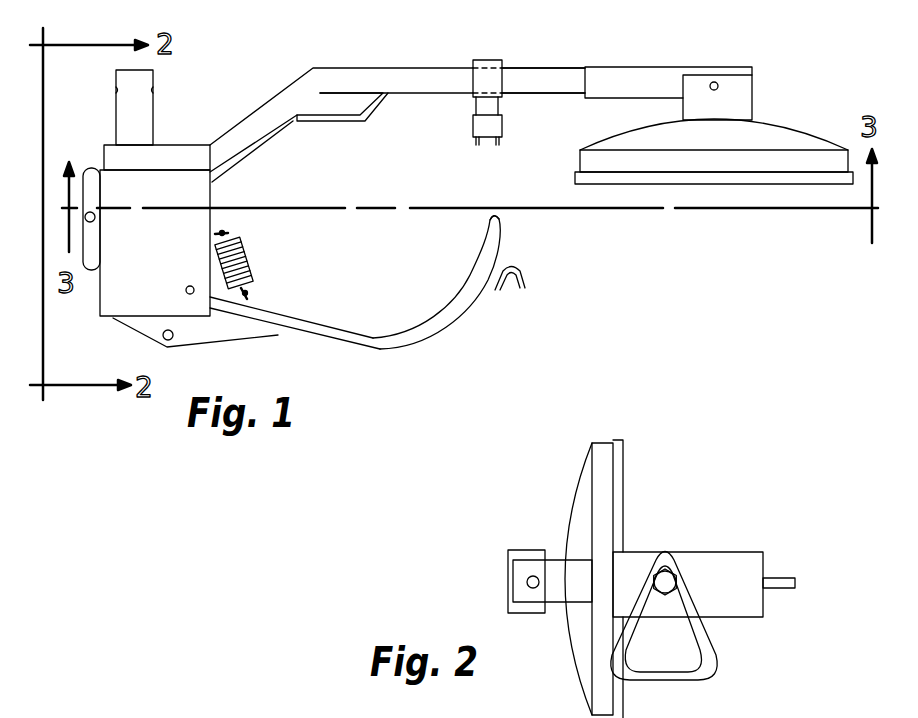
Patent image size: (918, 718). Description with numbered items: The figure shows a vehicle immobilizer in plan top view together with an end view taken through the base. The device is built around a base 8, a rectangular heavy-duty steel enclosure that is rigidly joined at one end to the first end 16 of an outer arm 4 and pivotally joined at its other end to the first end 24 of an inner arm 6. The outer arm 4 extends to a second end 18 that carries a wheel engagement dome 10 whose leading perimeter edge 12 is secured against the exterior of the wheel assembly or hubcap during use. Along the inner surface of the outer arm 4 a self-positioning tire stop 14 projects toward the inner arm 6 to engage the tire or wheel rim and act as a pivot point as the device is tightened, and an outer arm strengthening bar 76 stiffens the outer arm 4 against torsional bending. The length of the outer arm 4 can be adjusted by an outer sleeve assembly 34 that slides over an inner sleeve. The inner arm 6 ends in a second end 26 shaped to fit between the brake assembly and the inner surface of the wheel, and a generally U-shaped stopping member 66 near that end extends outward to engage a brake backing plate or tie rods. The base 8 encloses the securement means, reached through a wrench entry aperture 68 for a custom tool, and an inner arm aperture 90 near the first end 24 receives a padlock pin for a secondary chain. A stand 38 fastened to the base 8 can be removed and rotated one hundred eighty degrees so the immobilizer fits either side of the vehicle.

In FIG. 1, the outer arm 4 is at (397, 68).
In FIG. 2, the outer arm 4 is at (508, 575).
In FIG. 1, the inner arm 6 is at (393, 360).
In FIG. 1, the base 8 is at (93, 305).
In FIG. 1, the wheel engagement dome 10 is at (797, 131).
In FIG. 2, the wheel engagement dome 10 is at (582, 474).
In FIG. 1, the leading perimeter edge 12 is at (823, 185).
In FIG. 2, the leading perimeter edge 12 is at (625, 454).
In FIG. 1, the self-positioning tire stop 14 is at (475, 127).
In FIG. 1, the first end 16 is at (184, 145).
In FIG. 1, the second end 18 is at (560, 67).
In FIG. 1, the first end 24 is at (250, 323).
In FIG. 1, the second end 26 is at (501, 226).
In FIG. 1, the outer sleeve assembly 34 is at (613, 67).
In FIG. 1, the stand 38 is at (90, 167).
In FIG. 2, the stand 38 is at (718, 662).
In FIG. 1, the stopping member 66 is at (522, 287).
In FIG. 1, the wrench entry aperture 68 is at (134, 70).
In FIG. 1, the outer arm strengthening bar 76 is at (327, 118).
In FIG. 1, the inner arm aperture 90 is at (173, 340).